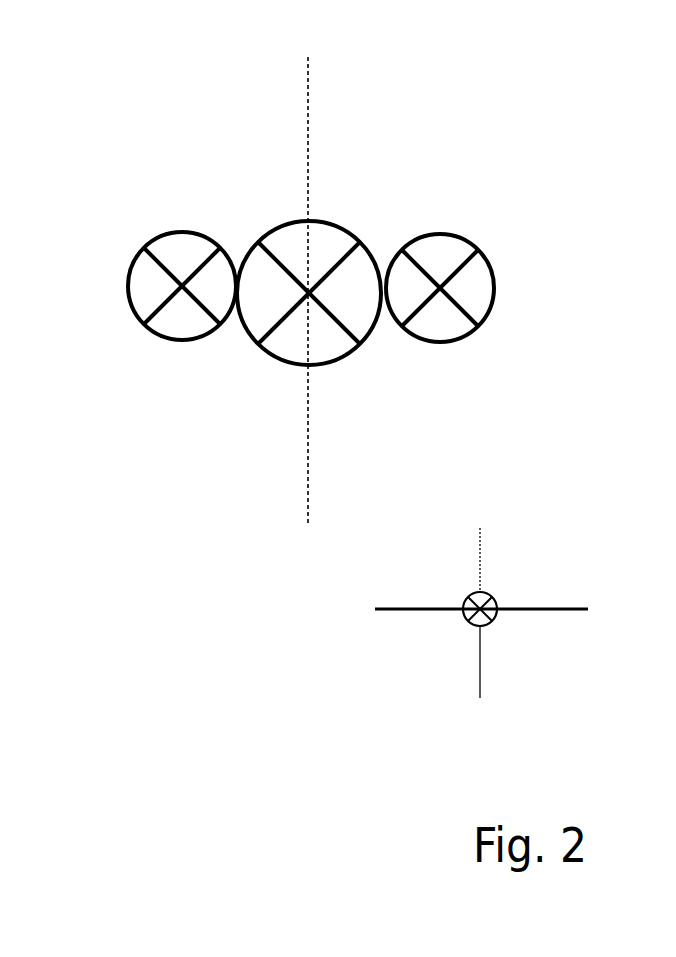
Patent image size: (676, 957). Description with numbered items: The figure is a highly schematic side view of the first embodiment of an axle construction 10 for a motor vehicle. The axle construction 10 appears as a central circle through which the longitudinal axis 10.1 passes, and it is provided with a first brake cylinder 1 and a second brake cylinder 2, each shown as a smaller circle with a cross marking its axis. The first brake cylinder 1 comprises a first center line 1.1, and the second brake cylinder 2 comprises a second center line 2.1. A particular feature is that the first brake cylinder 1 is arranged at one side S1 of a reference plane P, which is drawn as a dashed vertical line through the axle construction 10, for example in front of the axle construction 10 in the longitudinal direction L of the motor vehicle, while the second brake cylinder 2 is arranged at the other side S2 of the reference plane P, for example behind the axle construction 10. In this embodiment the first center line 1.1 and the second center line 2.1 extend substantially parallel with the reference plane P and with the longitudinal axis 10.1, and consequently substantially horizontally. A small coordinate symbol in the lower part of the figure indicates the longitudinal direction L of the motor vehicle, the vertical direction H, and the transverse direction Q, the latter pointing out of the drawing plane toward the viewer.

The axle construction 10 is at (314, 245).
The first brake cylinder 1 is at (145, 248).
The first center line 1.1 is at (182, 286).
The longitudinal axis 10.1 is at (309, 293).
The second brake cylinder 2 is at (480, 261).
The second center line 2.1 is at (440, 288).
The reference plane P is at (308, 100).
The one side of the reference plane S1 is at (94, 353).
The other side of the reference plane S2 is at (566, 353).
The vertical direction H is at (482, 614).
The longitudinal direction L is at (486, 609).
The transverse direction Q is at (492, 594).